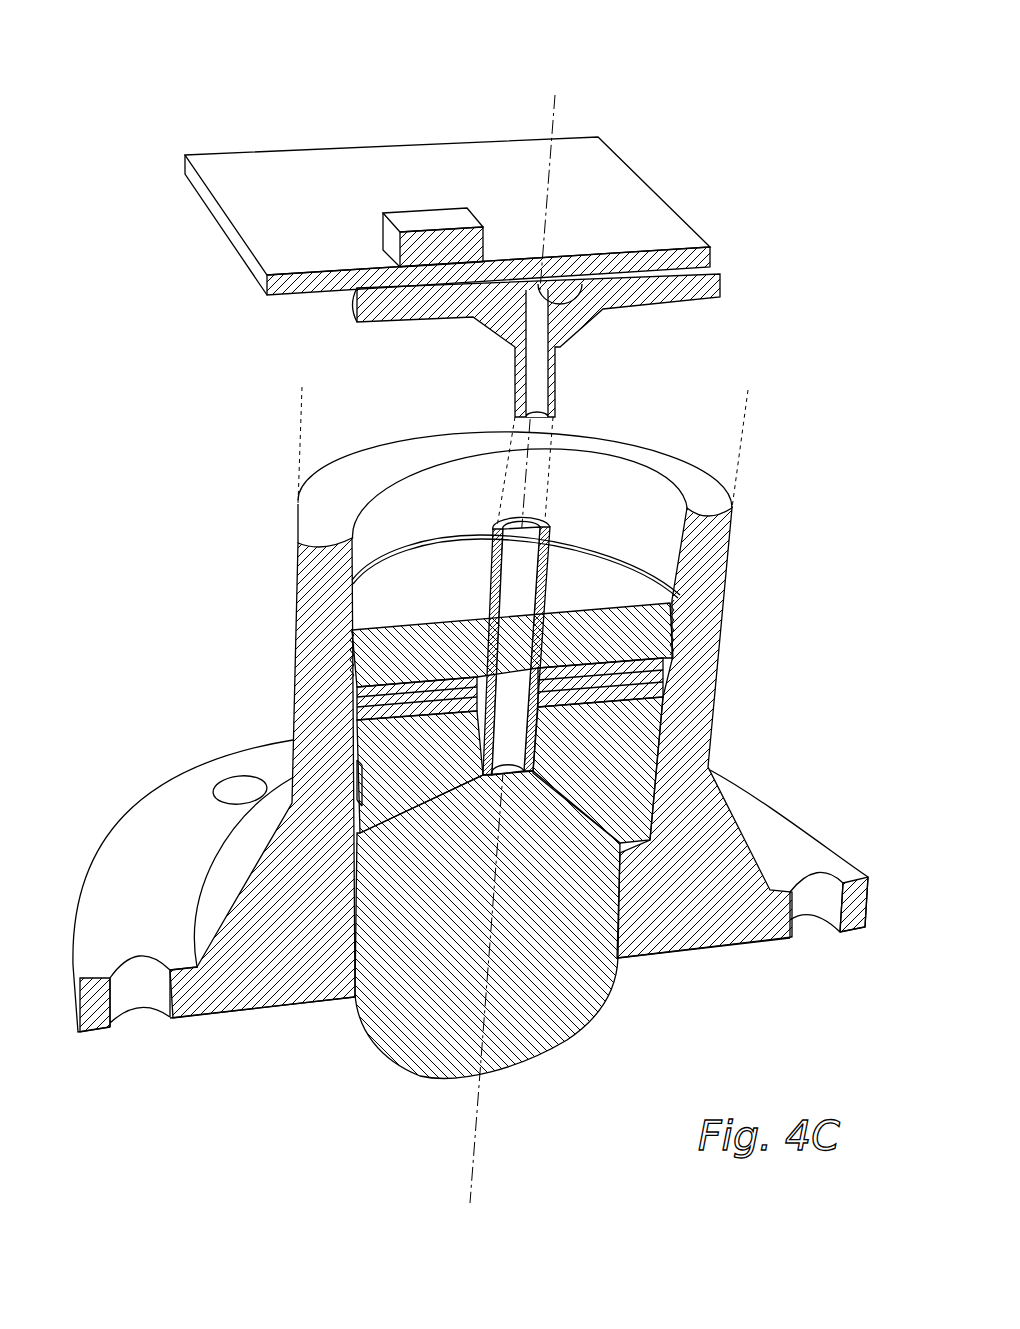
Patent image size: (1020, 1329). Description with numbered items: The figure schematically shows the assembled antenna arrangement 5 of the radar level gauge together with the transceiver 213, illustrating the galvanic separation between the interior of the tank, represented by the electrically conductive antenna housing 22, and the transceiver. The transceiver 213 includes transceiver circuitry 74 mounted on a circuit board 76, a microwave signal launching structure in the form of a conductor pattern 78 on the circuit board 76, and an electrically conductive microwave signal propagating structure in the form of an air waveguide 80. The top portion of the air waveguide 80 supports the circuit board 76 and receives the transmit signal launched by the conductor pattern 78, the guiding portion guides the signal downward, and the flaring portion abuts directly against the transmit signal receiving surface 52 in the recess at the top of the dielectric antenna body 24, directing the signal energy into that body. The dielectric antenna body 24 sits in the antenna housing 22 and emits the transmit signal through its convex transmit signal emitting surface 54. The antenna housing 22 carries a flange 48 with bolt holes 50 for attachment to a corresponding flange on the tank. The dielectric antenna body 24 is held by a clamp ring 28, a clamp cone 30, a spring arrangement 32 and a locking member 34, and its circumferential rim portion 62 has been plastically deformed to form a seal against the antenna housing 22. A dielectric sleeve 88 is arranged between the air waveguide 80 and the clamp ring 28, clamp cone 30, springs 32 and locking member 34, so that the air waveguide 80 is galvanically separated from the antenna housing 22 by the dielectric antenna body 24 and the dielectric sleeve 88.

The transceiver 213 is at (545, 80).
The circuit board 76 is at (275, 170).
The transceiver circuitry 74 is at (440, 215).
The conductor pattern 78 is at (563, 302).
The air waveguide 80 is at (598, 337).
The dielectric sleeve 88 is at (550, 598).
The locking member 34 is at (610, 623).
The spring arrangement 32 is at (637, 663).
The clamp cone 30 is at (620, 680).
The transmit signal receiving surface 52 is at (620, 710).
The clamp ring 28 is at (710, 732).
The antenna housing 22 is at (662, 772).
The circumferential rim portion 62 is at (335, 797).
The bolt holes 50 is at (820, 878).
The flange 48 is at (855, 878).
The convex transmit signal emitting surface 54 is at (545, 1072).
The antenna arrangement 5 is at (280, 1072).
The dielectric antenna body 24 is at (340, 1088).